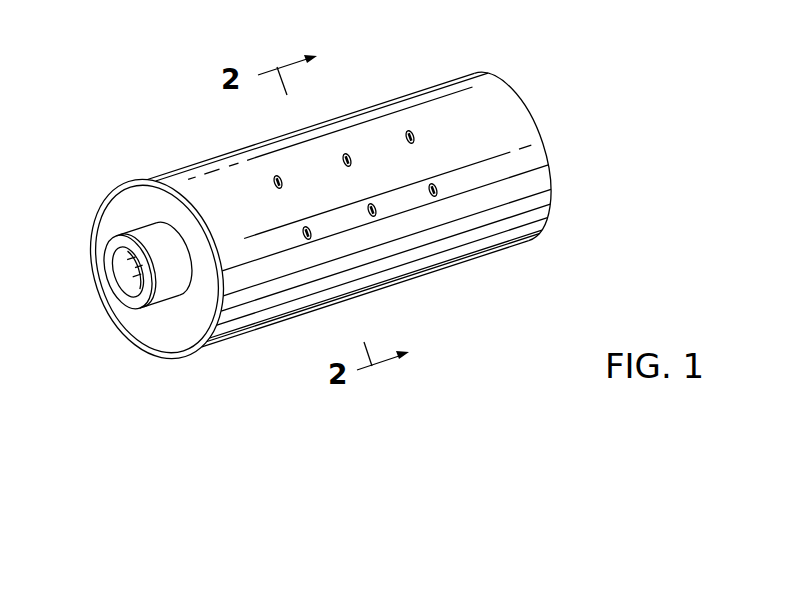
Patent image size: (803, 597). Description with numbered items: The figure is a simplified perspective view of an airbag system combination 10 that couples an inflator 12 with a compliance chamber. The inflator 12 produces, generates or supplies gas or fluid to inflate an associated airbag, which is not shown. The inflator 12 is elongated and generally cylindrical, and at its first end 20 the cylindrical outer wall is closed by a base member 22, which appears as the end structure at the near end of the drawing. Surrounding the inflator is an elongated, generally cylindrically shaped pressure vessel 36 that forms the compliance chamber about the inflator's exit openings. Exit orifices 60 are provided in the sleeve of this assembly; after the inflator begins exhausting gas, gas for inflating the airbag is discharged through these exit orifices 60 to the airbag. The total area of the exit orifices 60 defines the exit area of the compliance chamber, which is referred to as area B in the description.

The airbag system combination 10 is at (389, 74).
The inflator 12 is at (177, 318).
The first end 20 is at (105, 222).
The base member 22 is at (110, 292).
The pressure vessel 36 is at (465, 205).
The exit orifices 60 is at (366, 212).